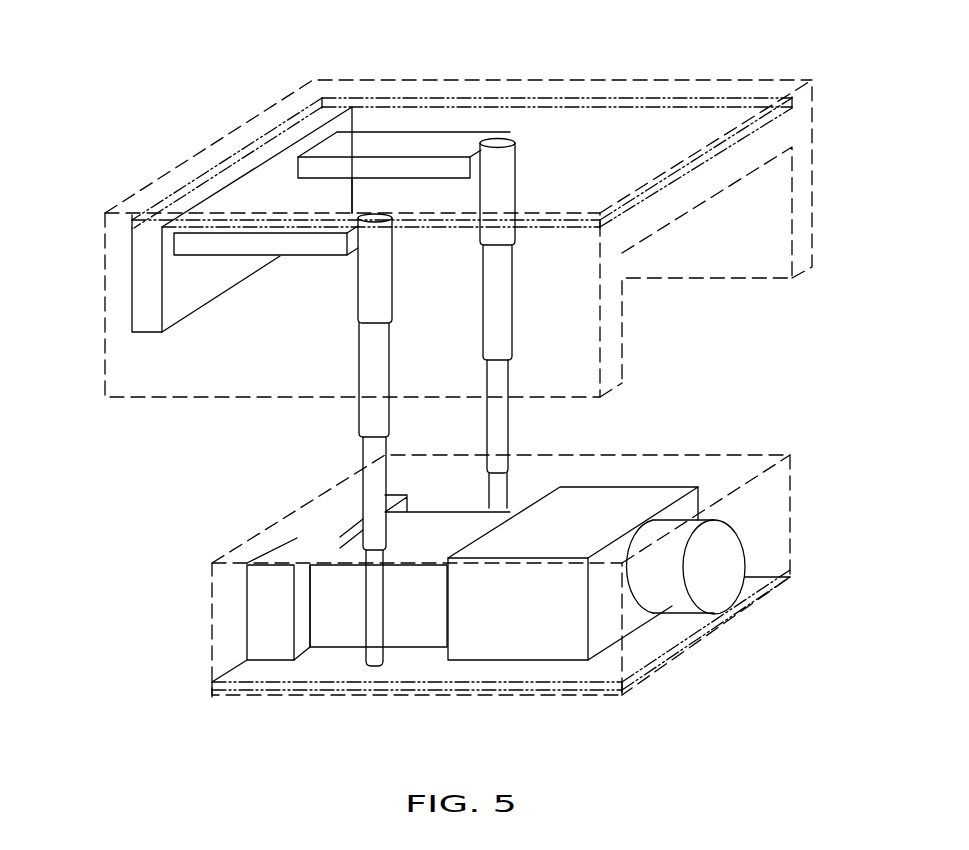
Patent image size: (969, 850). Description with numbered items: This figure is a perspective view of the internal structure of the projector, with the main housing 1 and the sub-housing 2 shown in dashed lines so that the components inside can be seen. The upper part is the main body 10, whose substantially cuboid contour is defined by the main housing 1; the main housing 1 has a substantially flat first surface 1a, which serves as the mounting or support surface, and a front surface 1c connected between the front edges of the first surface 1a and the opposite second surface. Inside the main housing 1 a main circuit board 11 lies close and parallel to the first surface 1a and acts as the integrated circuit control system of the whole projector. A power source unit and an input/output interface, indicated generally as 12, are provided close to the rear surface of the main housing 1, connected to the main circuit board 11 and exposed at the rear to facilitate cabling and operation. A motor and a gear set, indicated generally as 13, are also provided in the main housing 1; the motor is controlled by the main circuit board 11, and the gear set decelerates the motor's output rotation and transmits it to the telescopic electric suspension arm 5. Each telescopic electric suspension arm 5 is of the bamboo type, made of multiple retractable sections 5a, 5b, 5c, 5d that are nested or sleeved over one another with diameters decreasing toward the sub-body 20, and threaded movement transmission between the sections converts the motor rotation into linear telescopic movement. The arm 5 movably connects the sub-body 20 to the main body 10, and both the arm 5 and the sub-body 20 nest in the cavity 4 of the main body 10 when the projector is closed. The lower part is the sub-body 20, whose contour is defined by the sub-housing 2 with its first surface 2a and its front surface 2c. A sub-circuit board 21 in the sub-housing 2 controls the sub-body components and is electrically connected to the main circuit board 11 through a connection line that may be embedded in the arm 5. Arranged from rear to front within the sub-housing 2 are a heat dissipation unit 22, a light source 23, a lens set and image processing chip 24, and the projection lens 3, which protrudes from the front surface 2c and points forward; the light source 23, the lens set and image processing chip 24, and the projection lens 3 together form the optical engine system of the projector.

The main housing 1 is at (590, 78).
The first surface 1a is at (466, 80).
The front surface 1c is at (806, 122).
The main body 10 is at (745, 77).
The main circuit board 11 is at (660, 100).
The power source unit and input/output interface 12 is at (137, 290).
The motor and gear set 13 is at (337, 140).
The sub-housing 2 is at (793, 509).
The first surface 2a is at (662, 457).
The front surface 2c is at (782, 553).
The sub-body 20 is at (783, 447).
The sub-circuit board 21 is at (413, 686).
The heat dissipation unit 22 is at (257, 618).
The light source 23 is at (343, 640).
The lens set and image processing chip 24 is at (519, 648).
The projection lens 3 is at (722, 598).
The cavity 4 is at (697, 321).
The telescopic electric suspension arm 5 is at (358, 448).
The section 5a is at (510, 182).
The section 5b is at (505, 307).
The section 5c is at (505, 432).
The section 5d is at (493, 492).